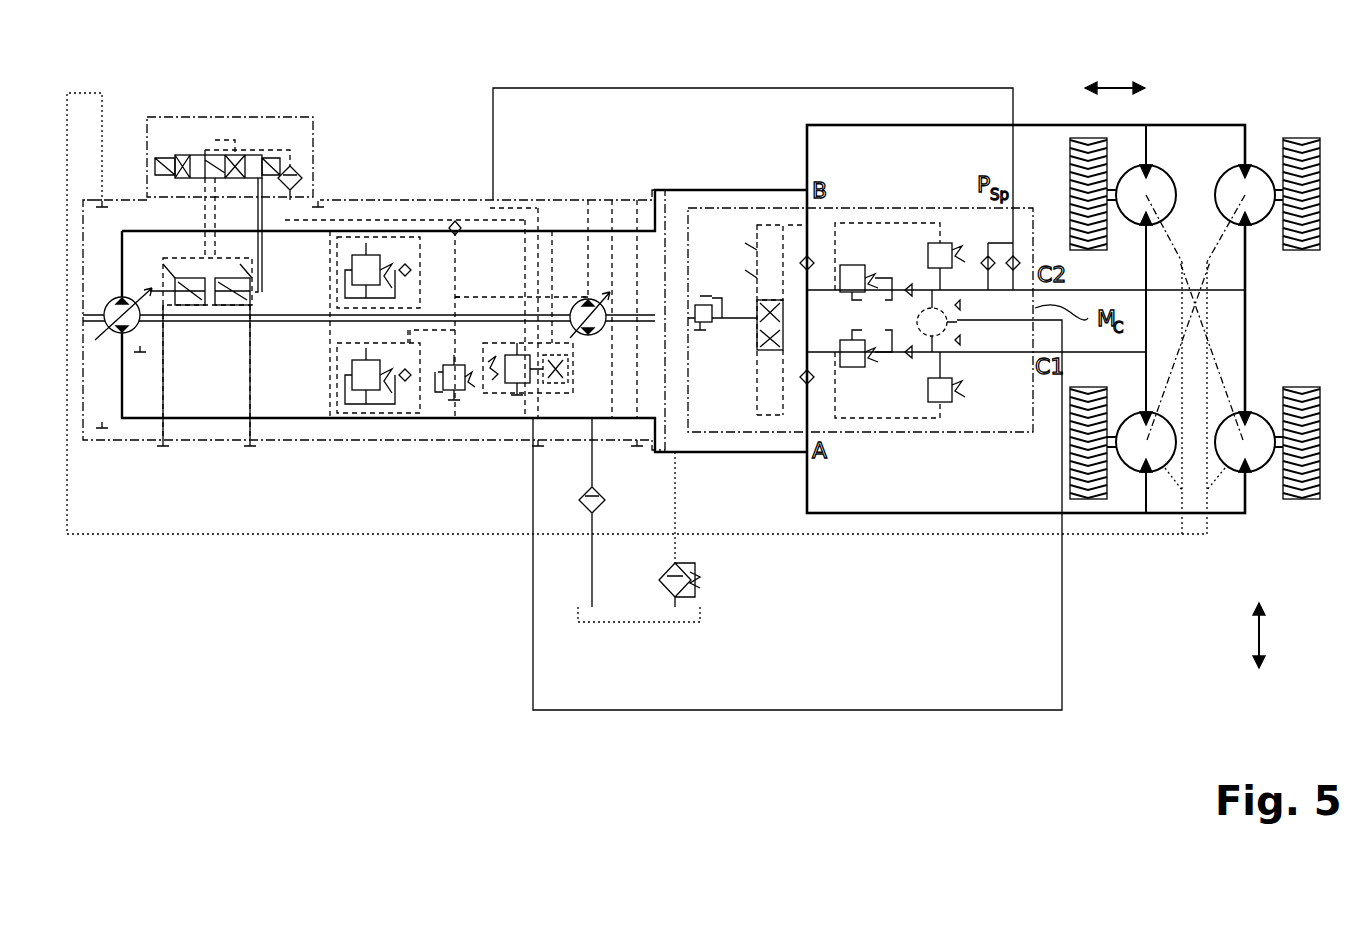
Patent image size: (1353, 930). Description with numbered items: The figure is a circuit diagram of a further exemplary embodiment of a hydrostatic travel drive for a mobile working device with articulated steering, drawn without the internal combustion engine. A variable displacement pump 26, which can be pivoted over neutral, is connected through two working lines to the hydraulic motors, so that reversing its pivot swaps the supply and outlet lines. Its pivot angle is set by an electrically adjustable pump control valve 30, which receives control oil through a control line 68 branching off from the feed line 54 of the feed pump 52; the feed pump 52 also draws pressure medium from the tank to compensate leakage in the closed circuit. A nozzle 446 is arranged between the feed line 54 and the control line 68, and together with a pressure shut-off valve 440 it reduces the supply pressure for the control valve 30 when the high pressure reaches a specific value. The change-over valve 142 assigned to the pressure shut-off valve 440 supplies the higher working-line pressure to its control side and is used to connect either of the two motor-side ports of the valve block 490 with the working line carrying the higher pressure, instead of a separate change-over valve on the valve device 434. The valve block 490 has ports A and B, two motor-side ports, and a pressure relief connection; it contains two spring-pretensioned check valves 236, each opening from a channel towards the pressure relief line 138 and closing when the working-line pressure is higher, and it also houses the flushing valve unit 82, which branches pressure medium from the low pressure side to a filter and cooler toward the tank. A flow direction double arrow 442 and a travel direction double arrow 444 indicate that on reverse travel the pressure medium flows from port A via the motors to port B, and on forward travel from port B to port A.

The pump control valve 30 is at (190, 140).
The variable displacement pump 26 is at (112, 298).
The control line 68 is at (405, 220).
The nozzle 446 is at (470, 222).
The feed line 54 is at (480, 292).
The feed pump 52 is at (602, 312).
The change-over valve 142 is at (575, 372).
The pressure shut-off valve 440 is at (497, 420).
The pressure relief line 138 is at (980, 712).
The valve device 434 is at (789, 745).
The flushing valve unit 82 is at (740, 358).
The valve block 490 is at (926, 440).
The check valve 236 is at (939, 322).
The flow direction double arrow 442 is at (1115, 82).
The travel direction double arrow 444 is at (1263, 638).